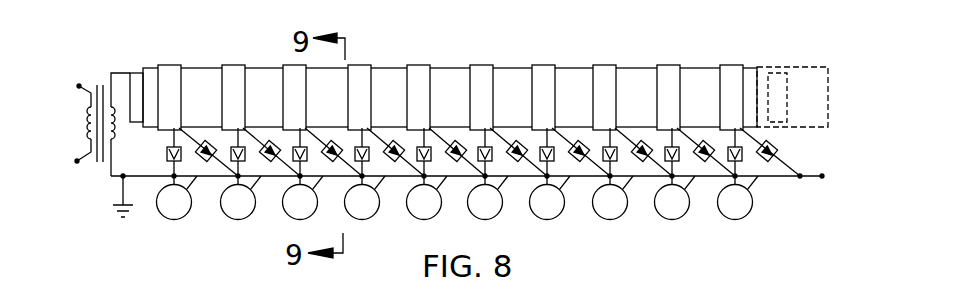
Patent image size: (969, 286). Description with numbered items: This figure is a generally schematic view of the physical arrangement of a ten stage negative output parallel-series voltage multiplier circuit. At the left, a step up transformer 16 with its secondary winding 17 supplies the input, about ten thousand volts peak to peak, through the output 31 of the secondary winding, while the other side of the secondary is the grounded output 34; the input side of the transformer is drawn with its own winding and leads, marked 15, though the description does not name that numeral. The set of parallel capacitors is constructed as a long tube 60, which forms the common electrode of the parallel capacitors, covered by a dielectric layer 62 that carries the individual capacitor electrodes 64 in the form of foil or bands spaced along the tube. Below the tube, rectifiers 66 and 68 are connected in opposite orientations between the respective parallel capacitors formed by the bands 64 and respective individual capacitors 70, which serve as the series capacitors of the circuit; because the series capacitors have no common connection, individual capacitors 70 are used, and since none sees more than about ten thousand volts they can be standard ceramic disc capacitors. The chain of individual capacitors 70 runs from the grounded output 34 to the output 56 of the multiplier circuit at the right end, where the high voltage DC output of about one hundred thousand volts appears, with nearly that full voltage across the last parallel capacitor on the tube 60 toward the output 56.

The transformer 15 is at (88, 138).
The step up transformer 16 is at (87, 78).
The secondary winding 17 is at (118, 137).
The output of the secondary winding 31 is at (118, 72).
The grounded output 34 is at (147, 178).
The output of the multiplier circuit 56 is at (822, 178).
The tube 60 is at (135, 75).
The dielectric layer 62 is at (459, 57).
The individual capacitor electrodes 64 is at (222, 65).
The rectifiers 66 is at (190, 186).
The rectifiers 68 is at (215, 143).
The individual capacitors 70 is at (175, 220).